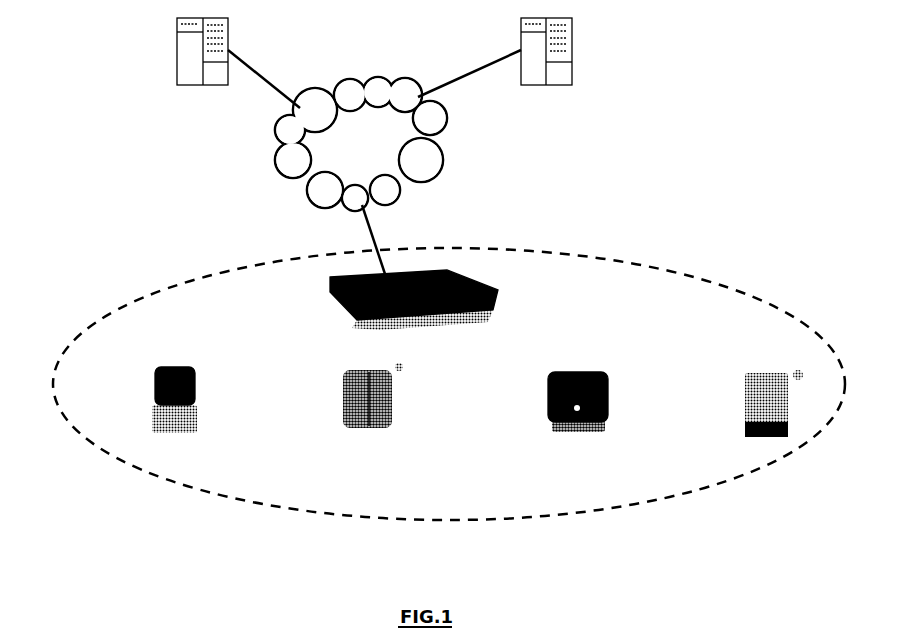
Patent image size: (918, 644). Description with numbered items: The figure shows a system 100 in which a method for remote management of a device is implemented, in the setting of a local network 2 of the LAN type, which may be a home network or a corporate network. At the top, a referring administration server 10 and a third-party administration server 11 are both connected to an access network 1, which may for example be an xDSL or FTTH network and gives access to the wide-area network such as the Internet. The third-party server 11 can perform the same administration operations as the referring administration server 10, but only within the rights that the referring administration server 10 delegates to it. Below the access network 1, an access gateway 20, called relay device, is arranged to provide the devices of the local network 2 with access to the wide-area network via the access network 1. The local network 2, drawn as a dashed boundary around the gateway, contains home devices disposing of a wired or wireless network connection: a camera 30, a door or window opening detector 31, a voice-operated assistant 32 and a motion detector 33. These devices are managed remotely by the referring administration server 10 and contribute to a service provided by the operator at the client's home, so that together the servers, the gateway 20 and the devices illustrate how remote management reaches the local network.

The system 100 is at (122, 178).
The access network 1 is at (278, 162).
The referring administration server 10 is at (181, 86).
The third-party administration server 11 is at (524, 86).
The local network 2 is at (188, 491).
The access gateway 20 is at (350, 315).
The camera 30 is at (152, 425).
The door or window opening detector 31 is at (351, 428).
The voice-operated assistant 32 is at (555, 426).
The motion detector 33 is at (742, 436).